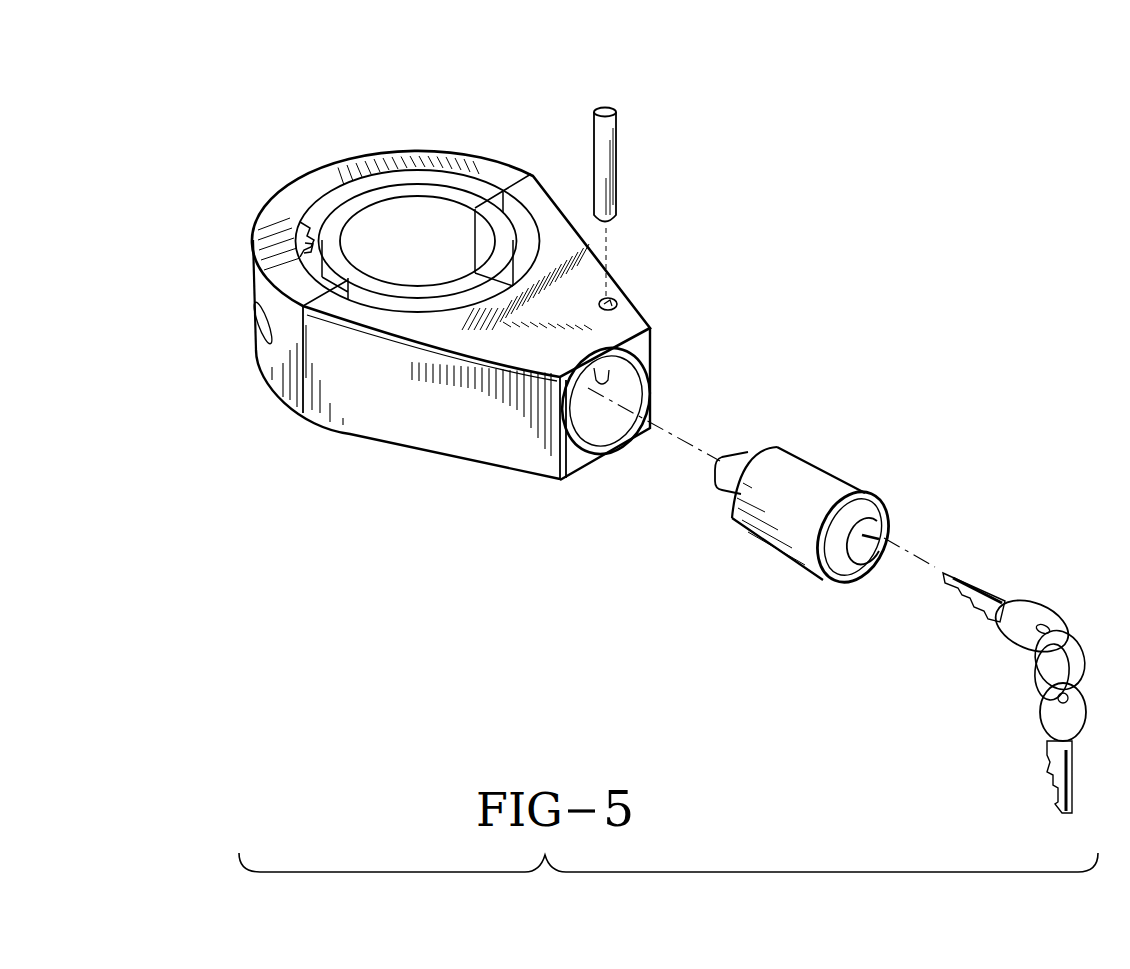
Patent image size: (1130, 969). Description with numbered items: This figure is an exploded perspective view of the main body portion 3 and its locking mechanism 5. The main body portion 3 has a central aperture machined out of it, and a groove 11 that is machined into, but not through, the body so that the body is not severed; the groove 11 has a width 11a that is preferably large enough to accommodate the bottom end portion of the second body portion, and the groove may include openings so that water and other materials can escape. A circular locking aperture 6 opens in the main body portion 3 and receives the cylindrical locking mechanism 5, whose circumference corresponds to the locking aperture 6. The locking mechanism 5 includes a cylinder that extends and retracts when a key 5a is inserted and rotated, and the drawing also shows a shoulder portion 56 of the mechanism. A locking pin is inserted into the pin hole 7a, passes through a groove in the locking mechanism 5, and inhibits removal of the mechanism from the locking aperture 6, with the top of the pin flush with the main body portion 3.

The main body portion 3 is at (356, 440).
The locking mechanism 5 is at (794, 570).
The key 5a is at (984, 576).
The retaining nut 56 is at (727, 451).
The locking aperture 6 is at (601, 428).
The pin hole 7a is at (620, 118).
The groove 11 is at (313, 230).
The width 11a is at (308, 249).